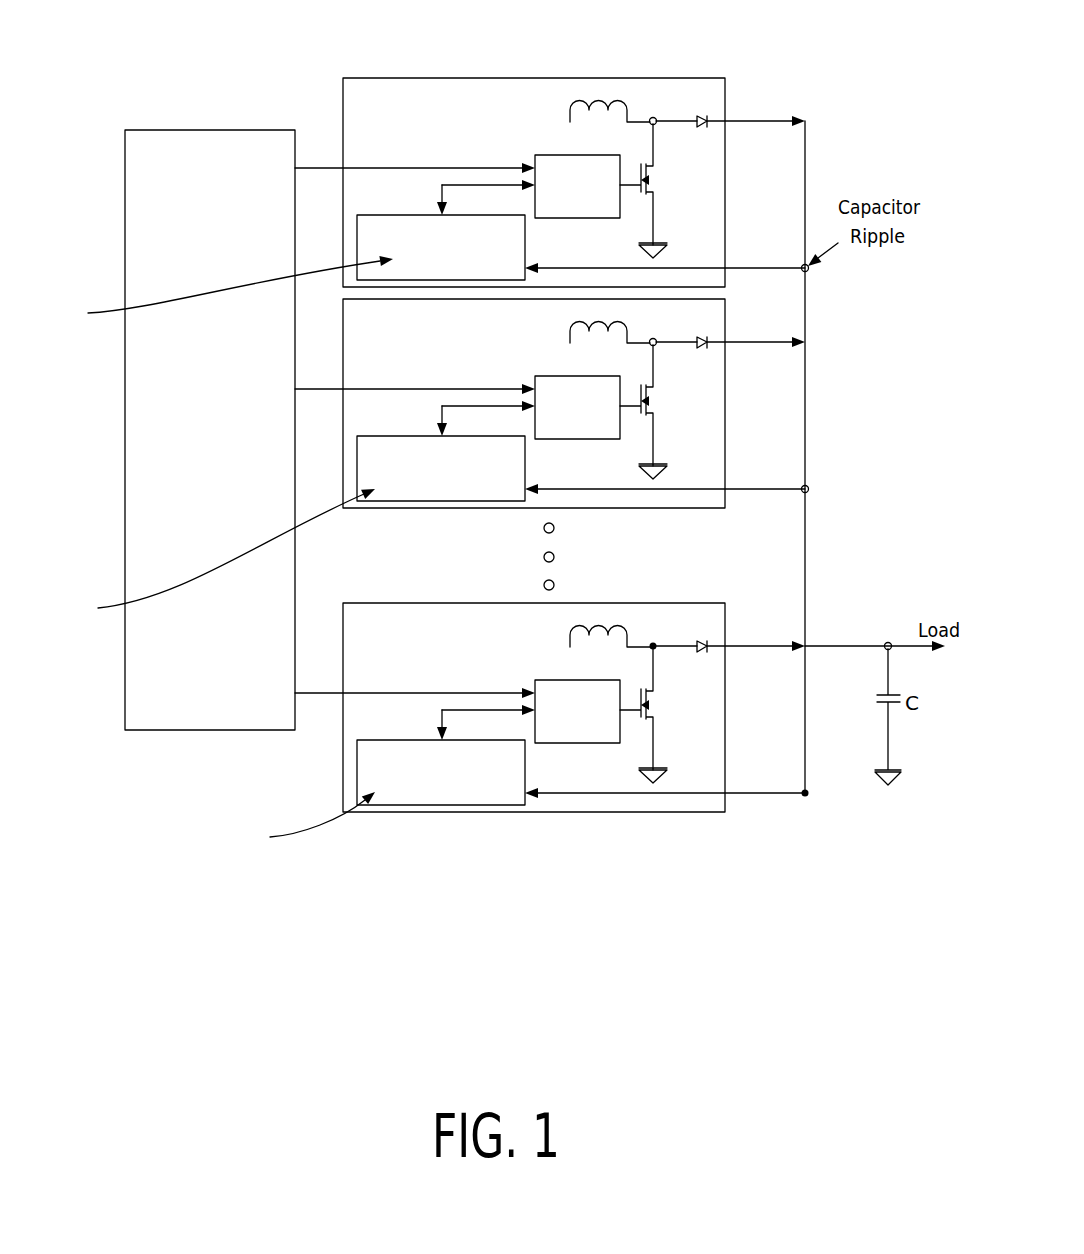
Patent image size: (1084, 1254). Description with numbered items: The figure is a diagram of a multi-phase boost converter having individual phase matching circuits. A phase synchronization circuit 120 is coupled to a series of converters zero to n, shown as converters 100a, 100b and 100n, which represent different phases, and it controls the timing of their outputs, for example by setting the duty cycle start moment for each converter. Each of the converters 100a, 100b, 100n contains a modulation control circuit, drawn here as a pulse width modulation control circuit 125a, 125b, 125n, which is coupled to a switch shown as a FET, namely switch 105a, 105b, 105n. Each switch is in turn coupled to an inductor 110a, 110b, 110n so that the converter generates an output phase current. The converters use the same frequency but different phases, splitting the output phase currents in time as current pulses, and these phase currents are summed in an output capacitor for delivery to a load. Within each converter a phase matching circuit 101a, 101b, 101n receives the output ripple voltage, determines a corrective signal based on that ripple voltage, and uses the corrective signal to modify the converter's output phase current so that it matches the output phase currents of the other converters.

The phase synchronization circuit 120 is at (210, 430).
The phase matching circuit 101a is at (218, 291).
The phase matching circuit 101b is at (213, 556).
The phase matching circuit 101n is at (298, 822).
The converter 0 100a is at (735, 216).
The converter 1 100b is at (736, 421).
The converter n 100n is at (741, 755).
The inductor 110a is at (593, 85).
The inductor 110b is at (642, 319).
The inductor 110n is at (629, 624).
The switch 105a is at (674, 175).
The switch 105b is at (674, 396).
The switch 105n is at (674, 702).
The pulse width modulation (PWM) control circuit 125a is at (537, 150).
The pulse width modulation (PWM) control circuit 125b is at (622, 443).
The pulse width modulation (PWM) control circuit 125n is at (598, 760).